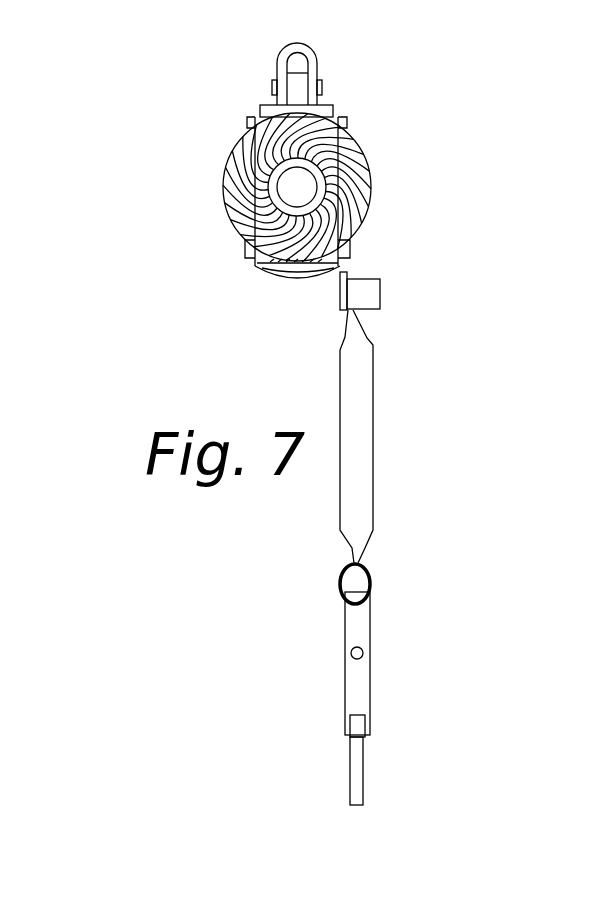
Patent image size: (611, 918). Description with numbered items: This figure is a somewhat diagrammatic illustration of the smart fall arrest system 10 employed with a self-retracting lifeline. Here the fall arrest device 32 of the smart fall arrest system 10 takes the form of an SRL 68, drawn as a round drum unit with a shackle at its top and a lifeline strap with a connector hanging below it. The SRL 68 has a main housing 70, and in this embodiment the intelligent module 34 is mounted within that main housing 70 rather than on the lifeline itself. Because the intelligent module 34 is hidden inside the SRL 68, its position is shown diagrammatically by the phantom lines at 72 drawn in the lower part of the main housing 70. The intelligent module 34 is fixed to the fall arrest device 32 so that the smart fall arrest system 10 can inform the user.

The smart fall arrest system 10 is at (448, 202).
The fall arrest device 32 is at (374, 163).
The intelligent module 34 is at (283, 242).
The SRL 68 is at (209, 163).
The main housing 70 is at (243, 230).
The phantom lines 72 is at (300, 266).